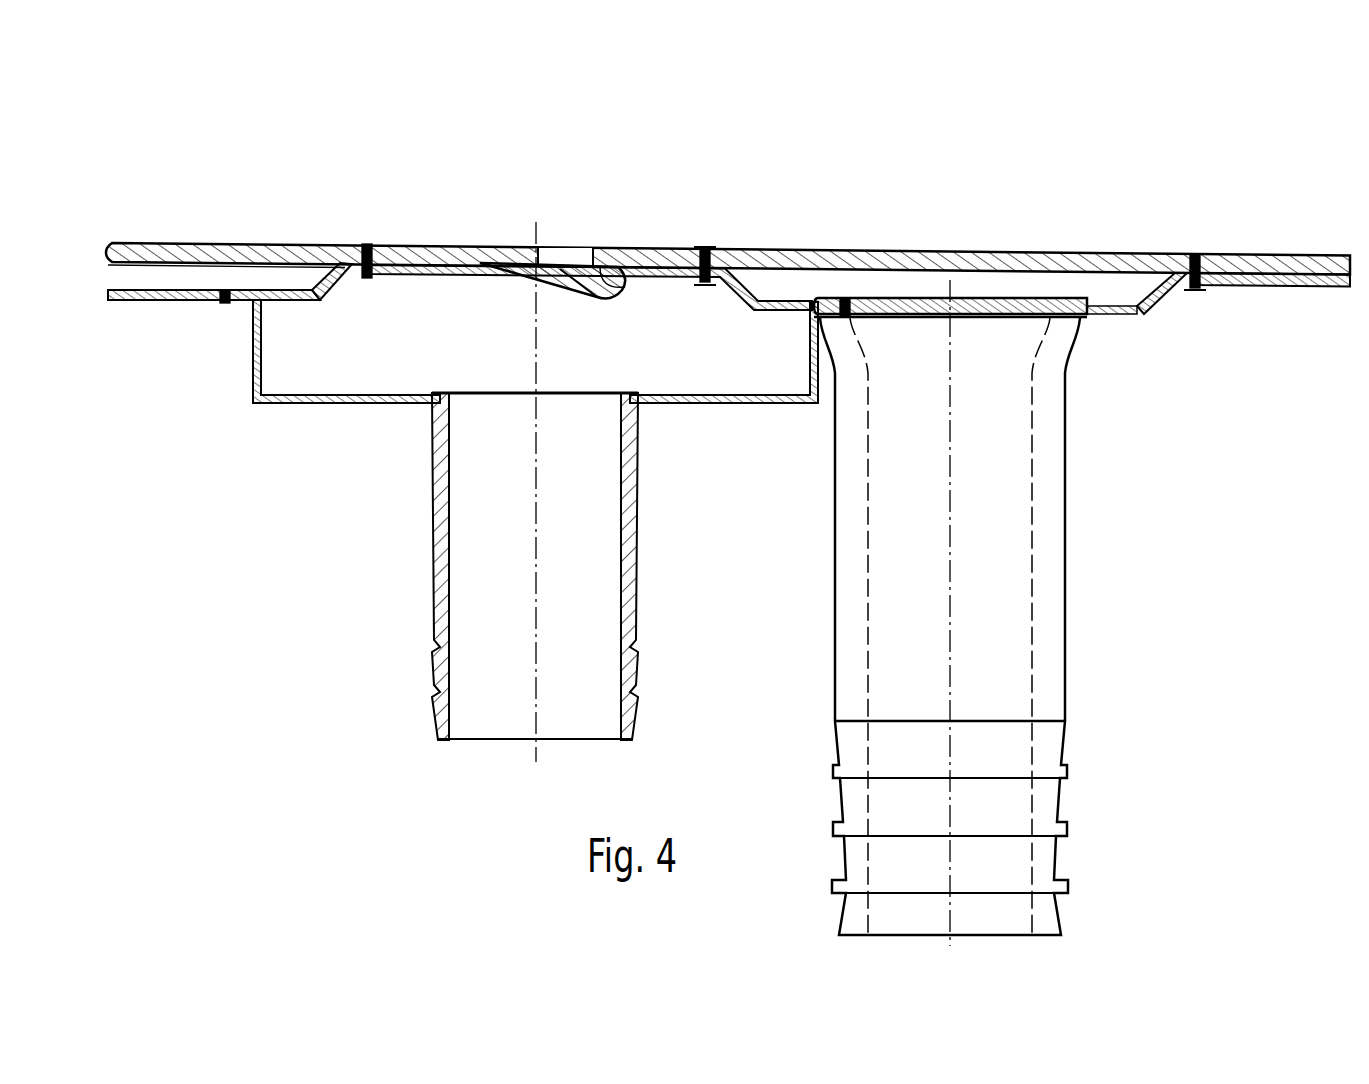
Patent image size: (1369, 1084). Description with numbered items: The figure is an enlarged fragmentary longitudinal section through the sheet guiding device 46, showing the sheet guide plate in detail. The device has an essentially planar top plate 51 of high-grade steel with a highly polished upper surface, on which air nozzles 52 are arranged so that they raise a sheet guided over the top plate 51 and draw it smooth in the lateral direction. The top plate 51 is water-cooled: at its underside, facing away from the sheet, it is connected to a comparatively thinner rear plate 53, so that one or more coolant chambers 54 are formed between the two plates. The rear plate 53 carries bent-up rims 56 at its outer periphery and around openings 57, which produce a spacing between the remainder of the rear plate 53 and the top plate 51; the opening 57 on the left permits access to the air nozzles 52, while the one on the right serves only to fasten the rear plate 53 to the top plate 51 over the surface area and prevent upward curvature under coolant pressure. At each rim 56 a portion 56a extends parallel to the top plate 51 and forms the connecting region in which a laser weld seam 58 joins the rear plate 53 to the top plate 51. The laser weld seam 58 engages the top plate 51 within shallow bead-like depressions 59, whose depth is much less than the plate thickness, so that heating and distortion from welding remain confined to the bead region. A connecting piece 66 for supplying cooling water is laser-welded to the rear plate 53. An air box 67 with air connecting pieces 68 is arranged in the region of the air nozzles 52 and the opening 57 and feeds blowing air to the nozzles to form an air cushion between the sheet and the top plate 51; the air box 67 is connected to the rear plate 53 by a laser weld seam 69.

The sheet guiding device 46 is at (814, 172).
The top plate 51 is at (1056, 260).
The air nozzles 52 is at (507, 222).
The rear plate 53 is at (1138, 316).
The coolant chambers 54 is at (290, 282).
The bent-up rims 56 is at (333, 282).
The portion of the rim extending parallel to the top plate surface 56a is at (1220, 284).
The openings 57 is at (688, 304).
The laser weld seam 58 is at (705, 247).
The bead-like depressions 59 is at (712, 243).
The connecting piece 66 is at (1050, 543).
The air box 67 is at (365, 405).
The air connecting pieces 68 is at (437, 596).
The laser weld seam 69 is at (226, 302).